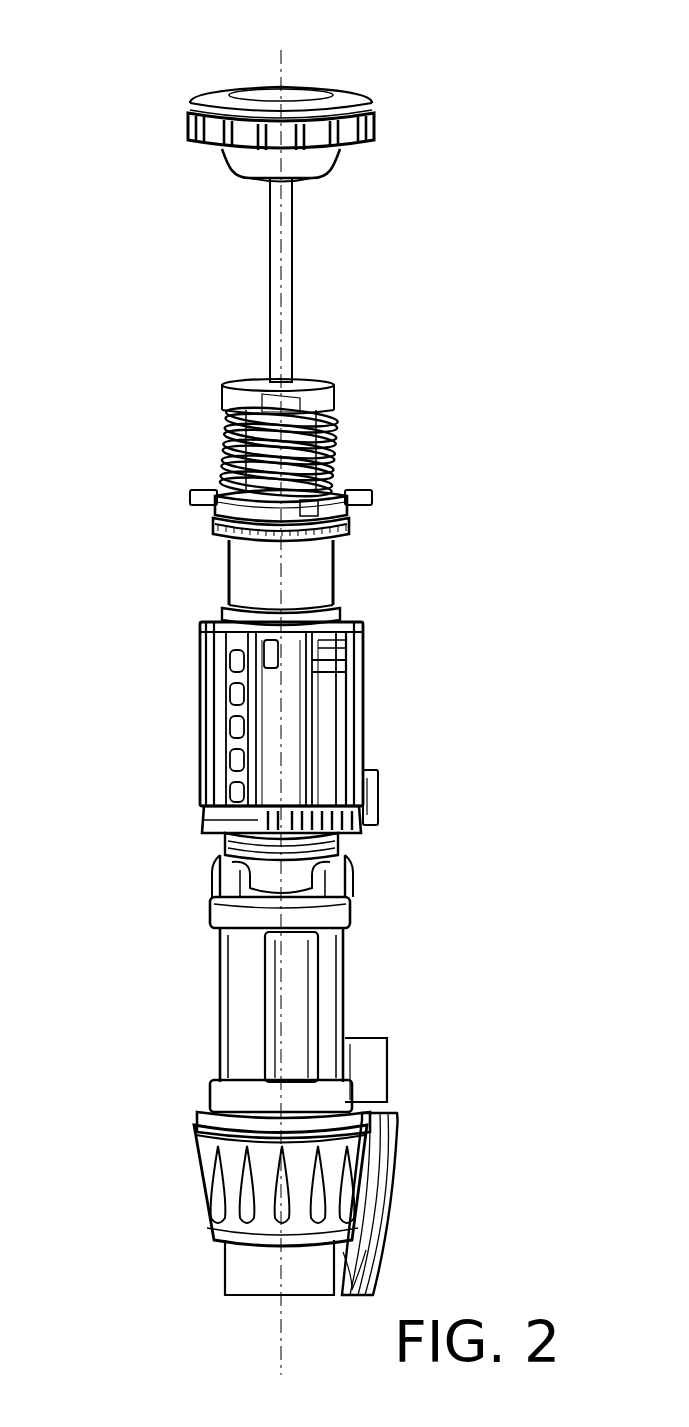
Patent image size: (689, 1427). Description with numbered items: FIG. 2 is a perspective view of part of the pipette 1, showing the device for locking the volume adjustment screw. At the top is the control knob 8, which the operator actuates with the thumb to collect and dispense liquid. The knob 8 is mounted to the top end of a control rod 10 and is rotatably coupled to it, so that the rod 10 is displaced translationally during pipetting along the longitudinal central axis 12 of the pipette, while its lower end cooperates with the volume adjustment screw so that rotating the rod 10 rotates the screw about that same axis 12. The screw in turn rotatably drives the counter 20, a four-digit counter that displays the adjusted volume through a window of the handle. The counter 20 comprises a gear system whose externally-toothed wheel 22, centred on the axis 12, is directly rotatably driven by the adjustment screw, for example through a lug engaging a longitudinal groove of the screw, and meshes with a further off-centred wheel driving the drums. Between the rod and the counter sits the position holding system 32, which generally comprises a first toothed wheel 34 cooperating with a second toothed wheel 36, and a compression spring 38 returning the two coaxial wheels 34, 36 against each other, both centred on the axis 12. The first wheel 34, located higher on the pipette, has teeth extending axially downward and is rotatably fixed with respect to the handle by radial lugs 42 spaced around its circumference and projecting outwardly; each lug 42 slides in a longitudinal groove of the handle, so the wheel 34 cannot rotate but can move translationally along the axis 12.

The pipette 1 is at (171, 79).
The control knob 8 is at (342, 102).
The control rod 10 is at (285, 250).
The longitudinal central axis 12 is at (283, 982).
The counter 20 is at (369, 676).
The externally-toothed wheel 22 is at (342, 828).
The position holding system 32 is at (352, 478).
The first toothed wheel 34 is at (338, 504).
The second toothed wheel 36 is at (348, 527).
The compression spring 38 is at (335, 427).
The radial lugs 42 is at (198, 503).